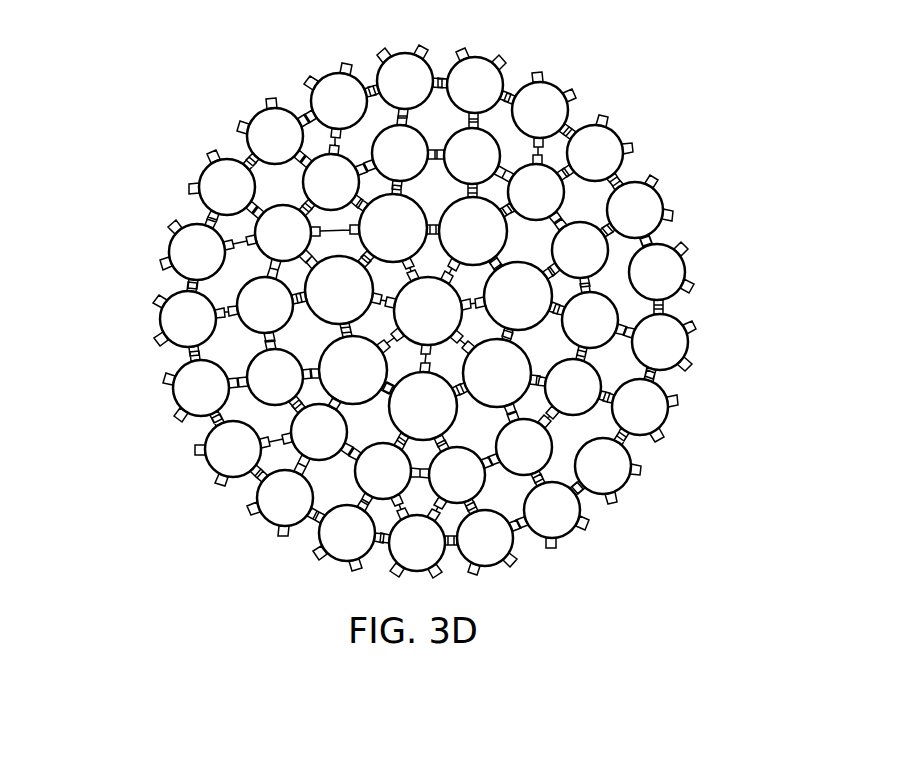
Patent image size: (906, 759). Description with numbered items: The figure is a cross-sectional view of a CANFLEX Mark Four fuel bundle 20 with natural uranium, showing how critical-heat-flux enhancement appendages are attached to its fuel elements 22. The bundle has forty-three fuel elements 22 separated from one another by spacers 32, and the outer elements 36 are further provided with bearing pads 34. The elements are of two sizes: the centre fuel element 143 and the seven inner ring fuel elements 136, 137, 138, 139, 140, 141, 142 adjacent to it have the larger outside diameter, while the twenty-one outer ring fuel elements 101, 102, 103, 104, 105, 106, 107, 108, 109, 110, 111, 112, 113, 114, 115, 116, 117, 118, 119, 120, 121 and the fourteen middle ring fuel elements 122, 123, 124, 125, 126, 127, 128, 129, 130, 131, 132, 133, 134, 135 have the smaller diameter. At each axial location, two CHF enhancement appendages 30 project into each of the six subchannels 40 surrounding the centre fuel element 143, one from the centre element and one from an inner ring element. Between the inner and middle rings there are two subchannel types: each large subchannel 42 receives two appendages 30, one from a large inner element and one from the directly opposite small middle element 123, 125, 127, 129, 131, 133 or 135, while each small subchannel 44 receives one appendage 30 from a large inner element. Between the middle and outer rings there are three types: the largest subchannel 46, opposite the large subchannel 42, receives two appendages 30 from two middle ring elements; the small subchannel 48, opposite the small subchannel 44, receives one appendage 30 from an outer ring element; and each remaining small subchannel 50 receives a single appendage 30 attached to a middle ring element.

The fuel bundle 20 is at (187, 127).
The fuel elements 22 is at (627, 468).
The CHF enhancement appendage 30 is at (298, 535).
The spacers 32 is at (305, 143).
The bearing pads 34 is at (200, 473).
The outer elements 36 is at (203, 185).
The subchannels surrounding the centre fuel element 40 is at (465, 275).
The large subchannel 42 is at (547, 352).
The small subchannel 44 is at (572, 283).
The largest subchannel 46 is at (227, 347).
The small subchannel 48 is at (248, 270).
The remaining small subchannels 50 is at (237, 408).
The outer ring fuel element 101 is at (475, 85).
The outer ring fuel element 102 is at (540, 110).
The outer ring fuel element 103 is at (595, 153).
The outer ring fuel element 104 is at (635, 210).
The outer ring fuel element 105 is at (657, 272).
The outer ring fuel element 106 is at (660, 342).
The outer ring fuel element 107 is at (640, 407).
The outer ring fuel element 108 is at (603, 466).
The outer ring fuel element 109 is at (552, 510).
The outer ring fuel element 110 is at (485, 538).
The outer ring fuel element 111 is at (417, 543).
The outer ring fuel element 112 is at (347, 533).
The outer ring fuel element 113 is at (285, 498).
The outer ring fuel element 114 is at (233, 449).
The outer ring fuel element 115 is at (201, 388).
The outer ring fuel element 116 is at (188, 319).
The outer ring fuel element 117 is at (197, 252).
The outer ring fuel element 118 is at (227, 187).
The outer ring fuel element 119 is at (275, 136).
The outer ring fuel element 120 is at (339, 101).
The outer ring fuel element 121 is at (405, 81).
The middle ring fuel element 122 is at (472, 156).
The middle ring fuel element 123 is at (536, 192).
The middle ring fuel element 124 is at (580, 250).
The middle ring fuel element 125 is at (590, 320).
The middle ring fuel element 126 is at (573, 387).
The middle ring fuel element 127 is at (524, 447).
The middle ring fuel element 128 is at (457, 475).
The middle ring fuel element 129 is at (383, 471).
The middle ring fuel element 130 is at (319, 432).
The middle ring fuel element 131 is at (275, 377).
The middle ring fuel element 132 is at (265, 305).
The middle ring fuel element 133 is at (283, 233).
The middle ring fuel element 134 is at (331, 182).
The middle ring fuel element 135 is at (400, 153).
The inner ring fuel element 136 is at (473, 231).
The inner ring fuel element 137 is at (518, 296).
The inner ring fuel element 138 is at (497, 373).
The inner ring fuel element 139 is at (423, 406).
The inner ring fuel element 140 is at (353, 370).
The inner ring fuel element 141 is at (339, 290).
The inner ring fuel element 142 is at (393, 228).
The centre fuel element 143 is at (428, 311).